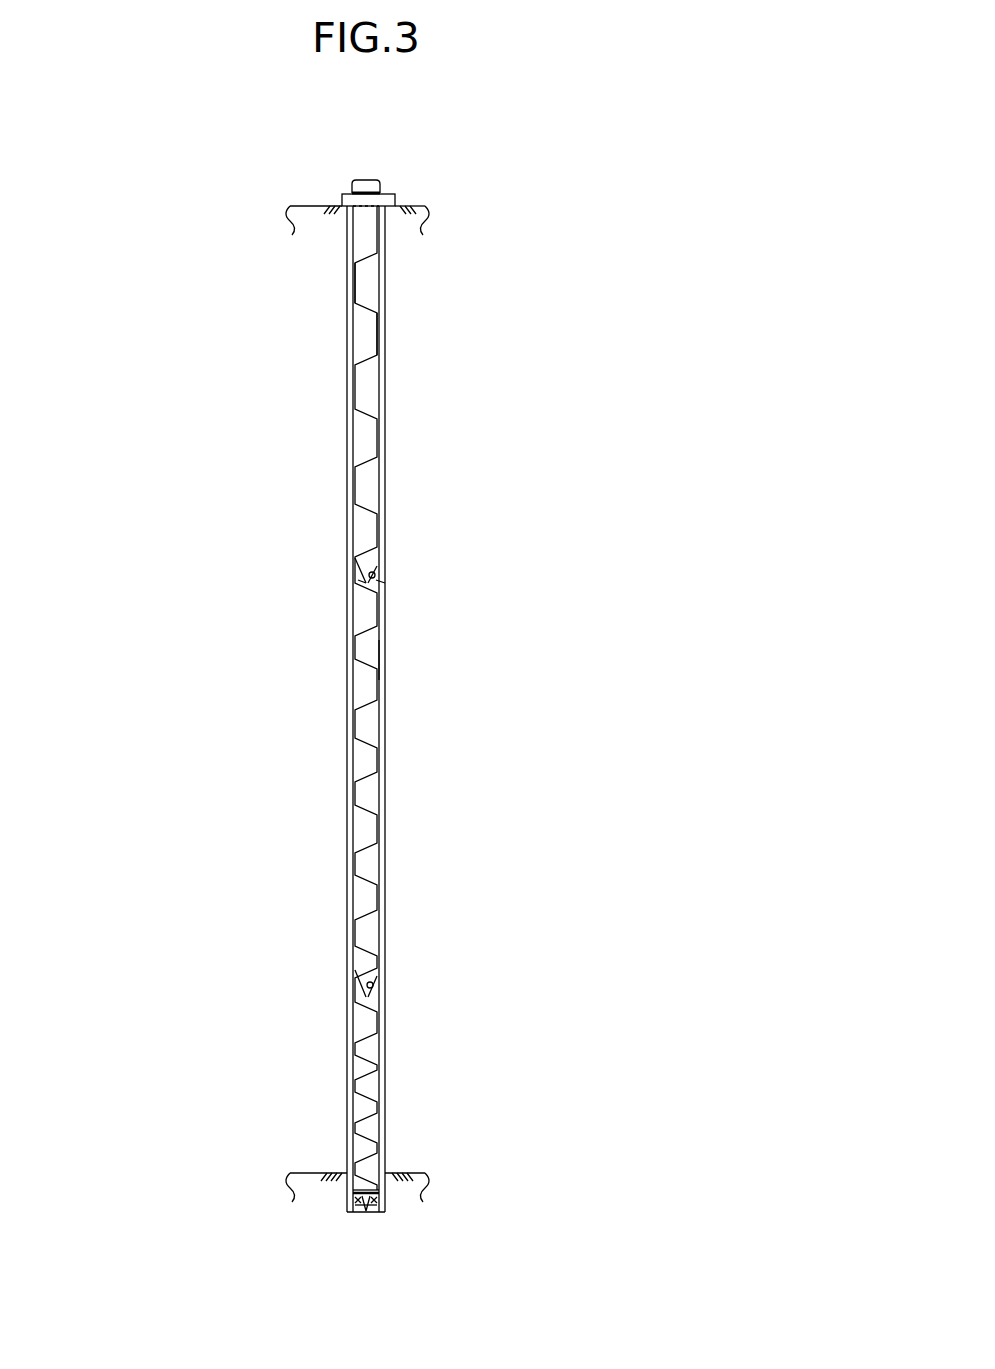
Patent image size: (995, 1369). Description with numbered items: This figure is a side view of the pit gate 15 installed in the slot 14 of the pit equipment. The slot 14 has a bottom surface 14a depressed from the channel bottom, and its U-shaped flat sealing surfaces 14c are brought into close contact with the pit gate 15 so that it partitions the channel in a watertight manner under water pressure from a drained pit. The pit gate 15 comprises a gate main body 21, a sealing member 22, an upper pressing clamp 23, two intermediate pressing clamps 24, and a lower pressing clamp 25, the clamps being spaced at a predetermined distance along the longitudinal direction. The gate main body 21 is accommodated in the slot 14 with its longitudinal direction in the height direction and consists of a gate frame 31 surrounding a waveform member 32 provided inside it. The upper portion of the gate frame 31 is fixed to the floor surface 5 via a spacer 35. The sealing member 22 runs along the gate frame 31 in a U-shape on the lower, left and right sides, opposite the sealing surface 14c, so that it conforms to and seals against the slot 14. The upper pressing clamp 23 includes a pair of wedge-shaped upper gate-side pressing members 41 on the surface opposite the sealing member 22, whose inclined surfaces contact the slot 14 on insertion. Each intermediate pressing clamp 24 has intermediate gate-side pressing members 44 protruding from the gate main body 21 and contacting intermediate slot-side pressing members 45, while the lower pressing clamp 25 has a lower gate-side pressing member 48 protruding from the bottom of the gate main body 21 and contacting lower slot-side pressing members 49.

The floor surface 5 is at (397, 205).
The slot 14 is at (378, 385).
The bottom surface 14a is at (360, 1212).
The sealing surfaces 14c is at (352, 443).
The pit gate 15 is at (362, 170).
The gate main body 21 is at (340, 694).
The sealing member 22 is at (347, 824).
The upper pressing clamp 23 is at (395, 219).
The intermediate pressing clamp 24 is at (398, 986).
The lower pressing clamp 25 is at (406, 1203).
The gate frame 31 is at (374, 191).
The waveform member 32 is at (386, 660).
The spacer 35 is at (347, 193).
The upper gate-side pressing members 41 is at (388, 220).
The intermediate gate-side pressing members 44 is at (366, 573).
The intermediate slot-side pressing members 45 is at (357, 580).
The lower gate-side pressing member 48 is at (367, 1212).
The lower slot-side pressing members 49 is at (356, 1212).